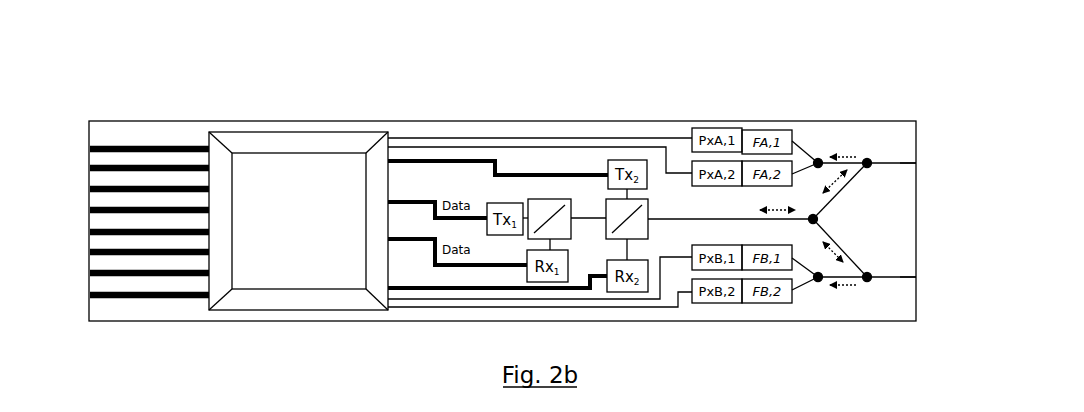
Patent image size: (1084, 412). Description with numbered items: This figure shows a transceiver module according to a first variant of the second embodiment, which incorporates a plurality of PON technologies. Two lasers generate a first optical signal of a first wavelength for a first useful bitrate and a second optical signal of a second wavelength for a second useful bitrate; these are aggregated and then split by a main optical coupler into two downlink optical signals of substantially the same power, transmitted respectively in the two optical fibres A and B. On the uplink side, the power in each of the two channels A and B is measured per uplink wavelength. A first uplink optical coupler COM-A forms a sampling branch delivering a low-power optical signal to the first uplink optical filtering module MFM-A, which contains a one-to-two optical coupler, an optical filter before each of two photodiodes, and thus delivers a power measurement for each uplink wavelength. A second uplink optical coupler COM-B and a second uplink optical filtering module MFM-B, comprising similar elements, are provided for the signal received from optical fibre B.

The first uplink optical filtering module MFM-A is at (818, 163).
The first uplink optical coupler COM-A is at (867, 163).
The second uplink optical filtering module MFM-B is at (818, 277).
The second uplink optical coupler COM-B is at (867, 277).
The optical fibre A is at (919, 158).
The optical fibre B is at (919, 274).